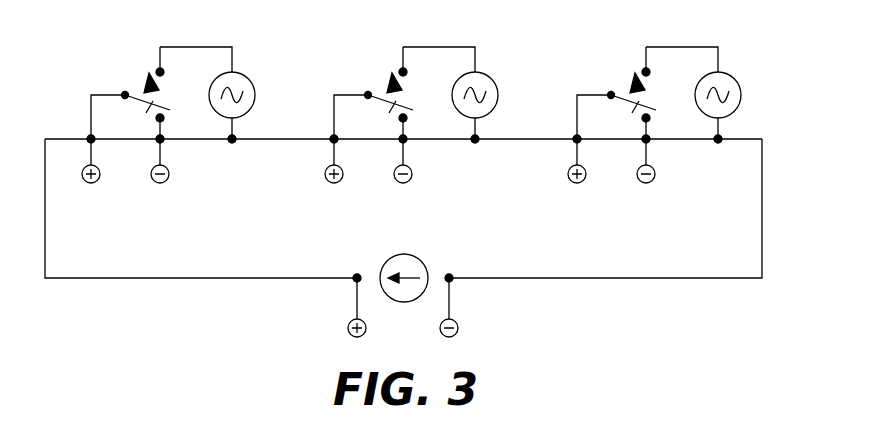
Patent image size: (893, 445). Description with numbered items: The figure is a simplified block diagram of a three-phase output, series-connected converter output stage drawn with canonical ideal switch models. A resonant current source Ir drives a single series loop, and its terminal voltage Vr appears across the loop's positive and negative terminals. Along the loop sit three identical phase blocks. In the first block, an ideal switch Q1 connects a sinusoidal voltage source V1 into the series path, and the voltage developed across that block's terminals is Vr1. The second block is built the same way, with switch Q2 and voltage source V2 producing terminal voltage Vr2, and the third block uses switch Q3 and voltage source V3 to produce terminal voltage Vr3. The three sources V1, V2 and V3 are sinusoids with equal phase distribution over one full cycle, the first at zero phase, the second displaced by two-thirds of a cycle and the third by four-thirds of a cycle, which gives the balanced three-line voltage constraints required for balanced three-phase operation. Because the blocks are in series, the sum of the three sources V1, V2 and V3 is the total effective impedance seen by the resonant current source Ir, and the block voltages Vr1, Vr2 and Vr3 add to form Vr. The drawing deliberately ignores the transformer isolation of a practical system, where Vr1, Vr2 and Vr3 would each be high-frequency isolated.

The switch Q1 is at (126, 92).
The switch Q2 is at (369, 92).
The switch Q3 is at (612, 92).
The first sinusoidal voltage source V1 is at (226, 93).
The second sinusoidal voltage source V2 is at (469, 93).
The third sinusoidal voltage source V3 is at (712, 93).
The first block terminal voltage Vr1 is at (125, 177).
The second block terminal voltage Vr2 is at (368, 177).
The third block terminal voltage Vr3 is at (611, 177).
The resonant current source Ir is at (403, 263).
The resonant voltage Vr is at (403, 311).